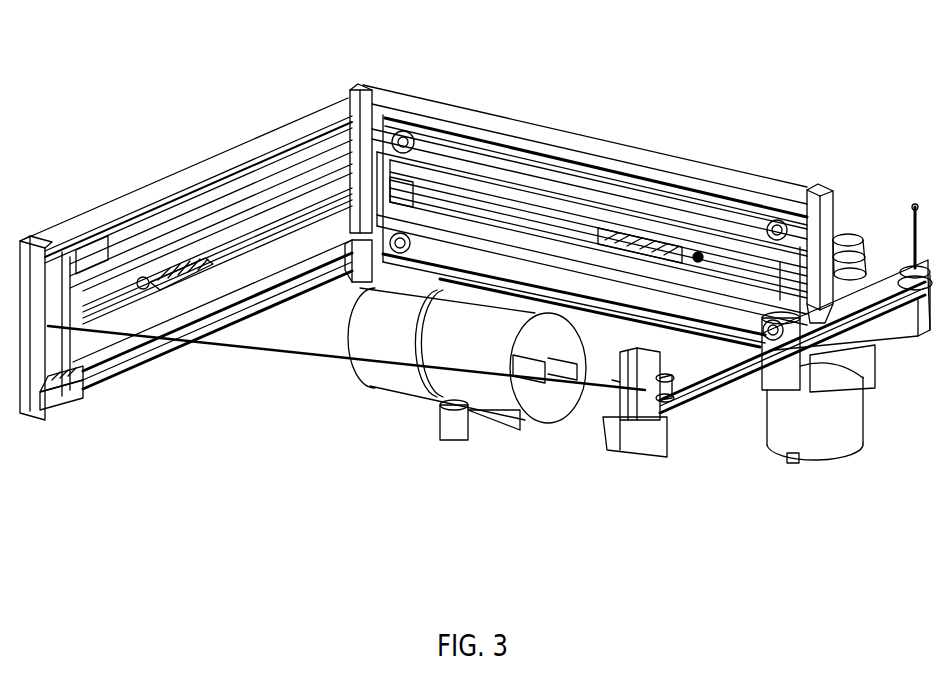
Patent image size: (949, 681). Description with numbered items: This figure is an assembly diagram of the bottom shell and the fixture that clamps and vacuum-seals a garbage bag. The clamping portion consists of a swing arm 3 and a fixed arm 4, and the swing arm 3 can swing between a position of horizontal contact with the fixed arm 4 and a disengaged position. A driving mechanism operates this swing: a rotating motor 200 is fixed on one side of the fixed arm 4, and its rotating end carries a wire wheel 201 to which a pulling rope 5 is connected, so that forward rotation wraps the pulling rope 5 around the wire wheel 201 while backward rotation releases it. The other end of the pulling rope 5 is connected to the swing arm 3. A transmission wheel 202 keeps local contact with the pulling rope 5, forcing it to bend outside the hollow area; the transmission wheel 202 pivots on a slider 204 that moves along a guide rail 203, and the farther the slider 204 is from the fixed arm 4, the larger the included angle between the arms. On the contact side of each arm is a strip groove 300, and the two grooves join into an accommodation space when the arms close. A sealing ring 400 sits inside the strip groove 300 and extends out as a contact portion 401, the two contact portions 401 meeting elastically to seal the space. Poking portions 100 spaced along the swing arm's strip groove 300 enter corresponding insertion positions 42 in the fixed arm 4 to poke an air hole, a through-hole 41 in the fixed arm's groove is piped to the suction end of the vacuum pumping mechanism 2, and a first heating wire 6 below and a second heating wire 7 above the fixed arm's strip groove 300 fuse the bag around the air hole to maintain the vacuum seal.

The vacuum pumping mechanism 2 is at (399, 382).
The swing arm 3 is at (247, 120).
The fixed arm 4 is at (590, 130).
The pulling rope 5 is at (288, 360).
The first heating wire 6 is at (730, 320).
The second heating wire 7 is at (467, 120).
The through-hole 41 is at (700, 255).
The insertion position 42 is at (616, 253).
The poking portion 100 is at (157, 277).
The rotating motor 200 is at (840, 430).
The wire wheel 201 is at (830, 287).
The transmission wheel 202 is at (672, 433).
The guide rail 203 is at (715, 405).
The slider 204 is at (663, 428).
The strip groove 300 is at (233, 237).
The sealing ring 400 is at (352, 117).
The contact portion 401 is at (193, 237).